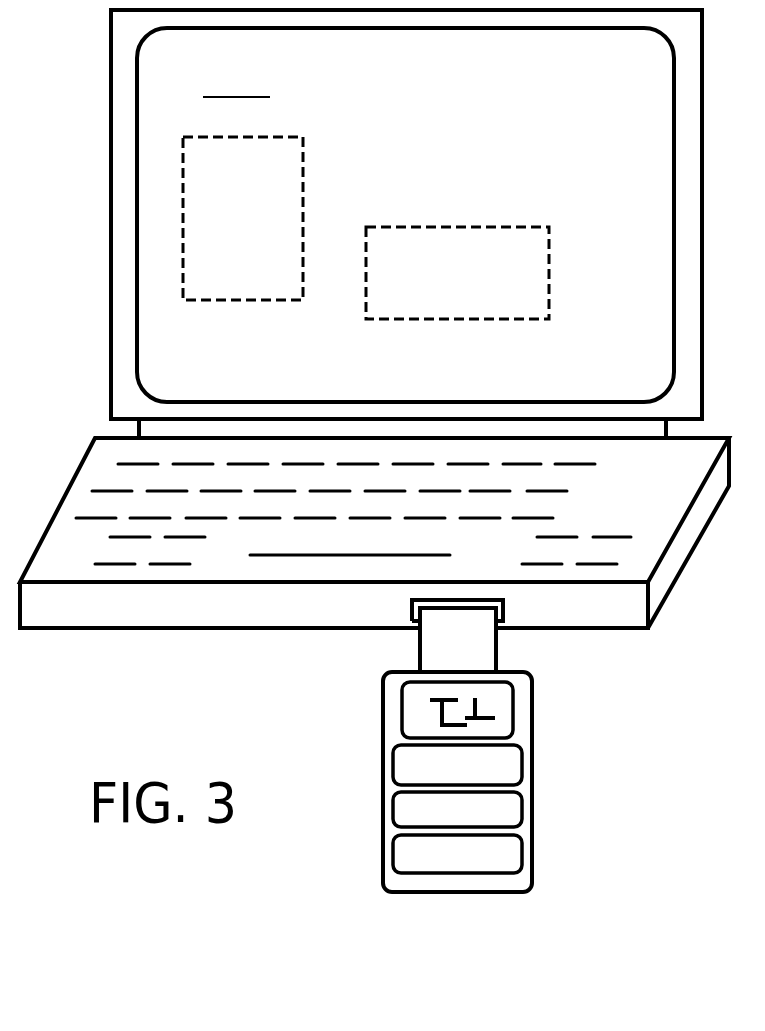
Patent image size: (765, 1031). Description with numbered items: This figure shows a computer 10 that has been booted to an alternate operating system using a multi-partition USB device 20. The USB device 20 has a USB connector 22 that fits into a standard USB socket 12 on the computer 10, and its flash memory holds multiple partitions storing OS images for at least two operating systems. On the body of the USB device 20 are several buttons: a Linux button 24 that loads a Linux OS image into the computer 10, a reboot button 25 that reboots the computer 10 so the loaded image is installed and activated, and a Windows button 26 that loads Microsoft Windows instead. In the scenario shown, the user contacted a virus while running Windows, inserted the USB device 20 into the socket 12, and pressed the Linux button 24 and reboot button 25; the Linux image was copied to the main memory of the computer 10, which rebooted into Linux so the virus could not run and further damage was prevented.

The computer 10 is at (610, 207).
The USB port 12 is at (411, 614).
The USB device 20 is at (495, 820).
The USB connector 22 is at (470, 655).
The Linux button 24 is at (523, 767).
The reboot button 25 is at (523, 812).
The Windows button 26 is at (523, 852).